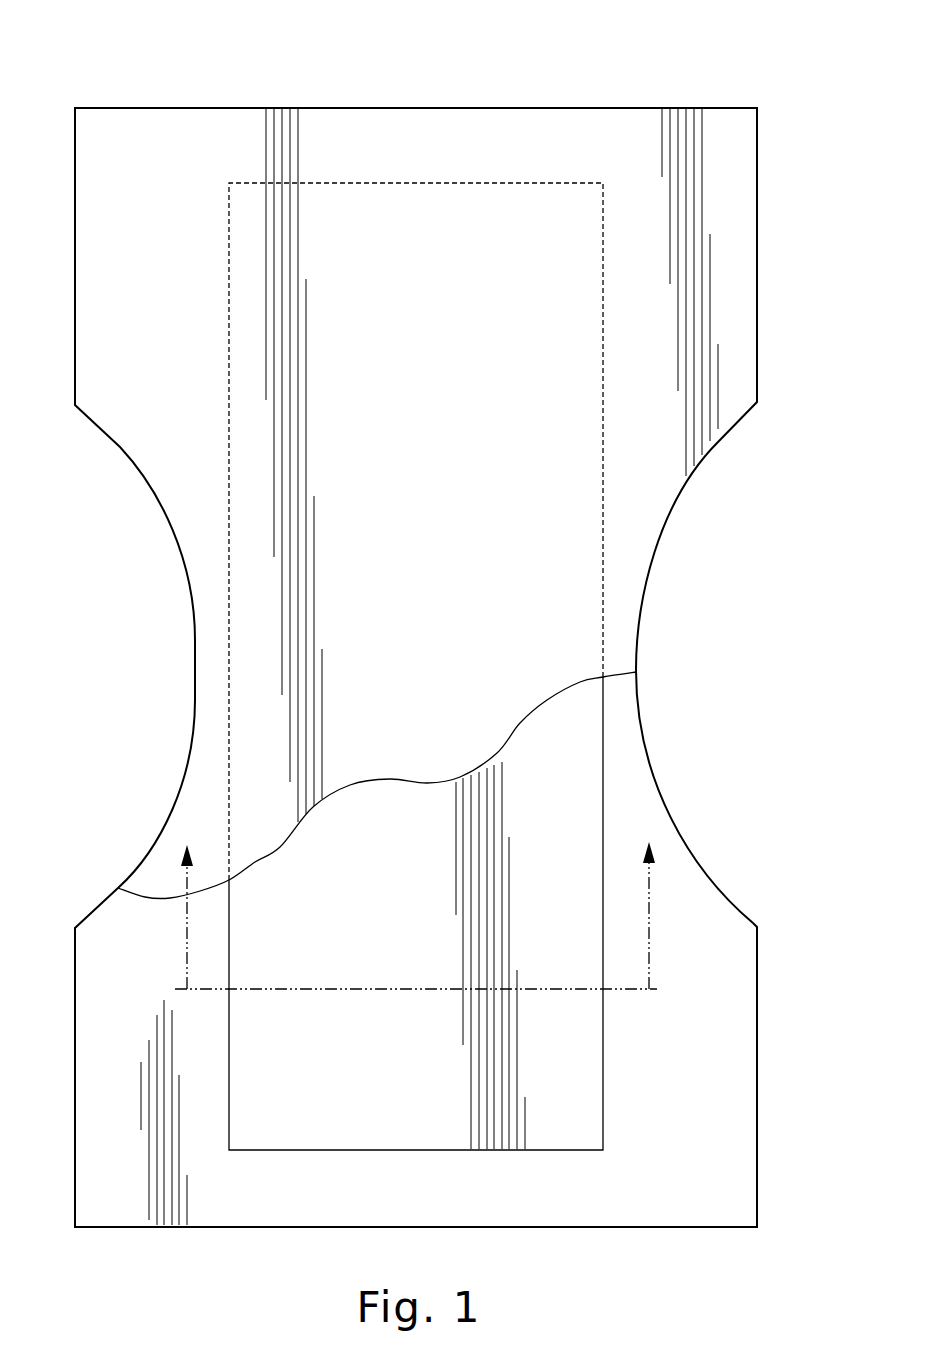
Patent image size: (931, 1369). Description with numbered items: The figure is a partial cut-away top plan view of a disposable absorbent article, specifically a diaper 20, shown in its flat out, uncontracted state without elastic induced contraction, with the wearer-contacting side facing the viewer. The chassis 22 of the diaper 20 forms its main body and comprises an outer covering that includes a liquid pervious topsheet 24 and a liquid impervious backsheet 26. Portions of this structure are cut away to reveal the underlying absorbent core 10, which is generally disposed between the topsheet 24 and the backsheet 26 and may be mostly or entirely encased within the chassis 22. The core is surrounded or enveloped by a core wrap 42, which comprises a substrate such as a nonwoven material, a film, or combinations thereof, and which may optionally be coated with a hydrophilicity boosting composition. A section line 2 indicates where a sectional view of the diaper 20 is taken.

The diaper 20 is at (434, 90).
The chassis 22 is at (774, 280).
The topsheet 24 is at (528, 222).
The backsheet 26 is at (625, 712).
The absorbent core 10 is at (319, 1114).
The core wrap 42 is at (555, 1133).
The section line 2- 2 is at (416, 900).